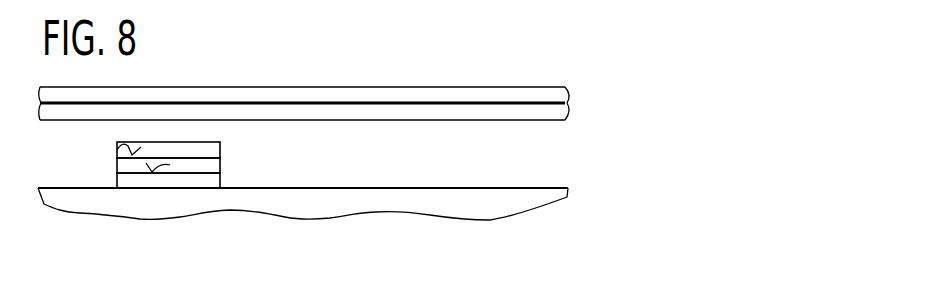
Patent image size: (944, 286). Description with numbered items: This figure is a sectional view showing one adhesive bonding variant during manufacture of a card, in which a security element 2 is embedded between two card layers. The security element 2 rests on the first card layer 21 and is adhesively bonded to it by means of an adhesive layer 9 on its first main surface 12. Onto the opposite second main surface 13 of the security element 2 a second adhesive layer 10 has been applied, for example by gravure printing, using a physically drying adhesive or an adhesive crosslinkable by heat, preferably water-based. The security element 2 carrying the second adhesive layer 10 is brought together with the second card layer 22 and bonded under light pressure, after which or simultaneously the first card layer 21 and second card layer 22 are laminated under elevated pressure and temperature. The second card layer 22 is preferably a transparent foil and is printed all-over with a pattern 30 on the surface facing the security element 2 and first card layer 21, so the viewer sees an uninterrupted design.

The second card layer 22 is at (554, 95).
The pattern 30 is at (554, 113).
The second adhesive layer 10 is at (212, 151).
The security element 2 is at (212, 166).
The adhesive layer 9 is at (124, 178).
The second main surface 13 is at (117, 150).
The first main surface 12 is at (170, 165).
The first card layer 21 is at (563, 195).